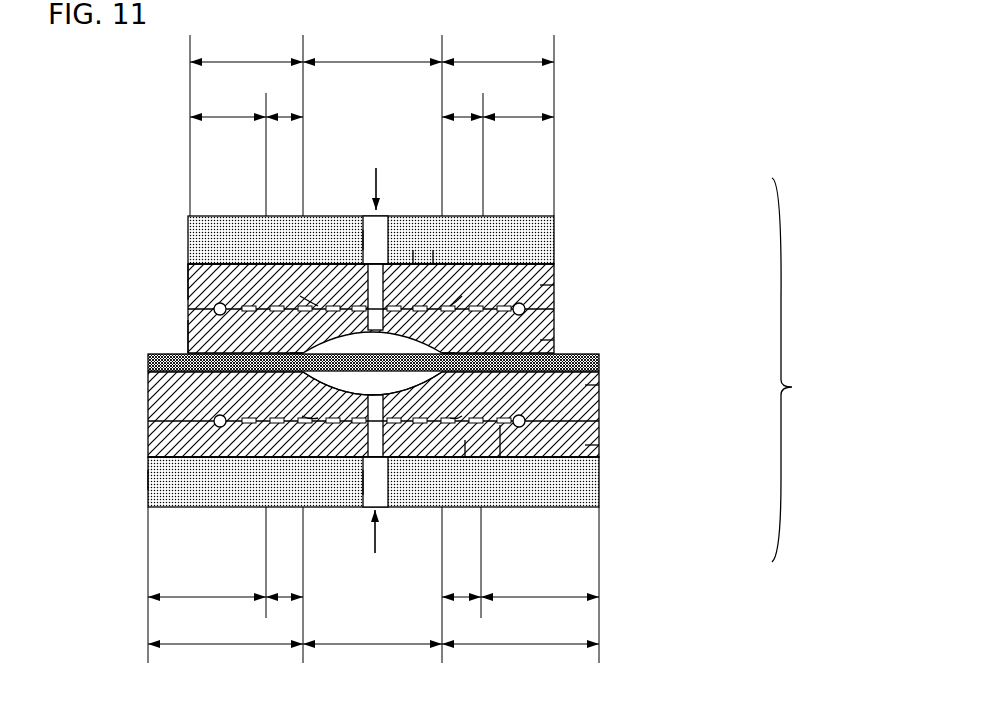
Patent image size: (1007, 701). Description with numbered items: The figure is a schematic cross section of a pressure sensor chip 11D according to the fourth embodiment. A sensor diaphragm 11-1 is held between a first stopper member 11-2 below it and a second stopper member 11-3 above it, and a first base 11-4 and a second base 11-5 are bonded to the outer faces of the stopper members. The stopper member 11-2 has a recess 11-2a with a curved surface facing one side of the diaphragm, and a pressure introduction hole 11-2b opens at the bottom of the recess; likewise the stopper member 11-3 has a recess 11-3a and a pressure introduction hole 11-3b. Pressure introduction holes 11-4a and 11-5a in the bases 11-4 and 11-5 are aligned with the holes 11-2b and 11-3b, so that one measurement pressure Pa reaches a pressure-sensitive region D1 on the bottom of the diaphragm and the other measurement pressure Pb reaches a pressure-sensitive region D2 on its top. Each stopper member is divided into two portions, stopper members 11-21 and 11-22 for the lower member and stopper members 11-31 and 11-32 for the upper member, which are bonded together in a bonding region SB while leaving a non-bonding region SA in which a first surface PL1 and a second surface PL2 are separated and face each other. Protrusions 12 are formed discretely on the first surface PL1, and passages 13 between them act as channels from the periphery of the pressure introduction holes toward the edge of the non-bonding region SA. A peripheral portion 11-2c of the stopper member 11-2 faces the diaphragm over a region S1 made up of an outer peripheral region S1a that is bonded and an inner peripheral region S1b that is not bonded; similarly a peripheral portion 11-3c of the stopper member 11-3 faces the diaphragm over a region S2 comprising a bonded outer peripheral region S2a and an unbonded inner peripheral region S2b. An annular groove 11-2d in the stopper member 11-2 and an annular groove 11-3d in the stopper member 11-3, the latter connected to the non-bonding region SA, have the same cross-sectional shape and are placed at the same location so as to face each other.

The pressure sensor chip 11D is at (428, 348).
The sensor diaphragm 11-1 is at (599, 362).
The first stopper member 11-2 is at (599, 405).
The stopper member 11-21 is at (599, 386).
The stopper member 11-22 is at (599, 446).
The recess 11-2a is at (402, 510).
The pressure introduction hole 11-2b is at (300, 507).
The peripheral portion 11-2c is at (450, 374).
The annular groove 11-2d is at (170, 468).
The second stopper member 11-3 is at (554, 274).
The stopper member 11-31 is at (548, 346).
The stopper member 11-32 is at (554, 288).
The recess 11-3a is at (458, 262).
The pressure introduction hole 11-3b is at (300, 275).
The peripheral portion 11-3c is at (188, 340).
The annular groove 11-3d is at (188, 237).
The first base 11-4 is at (599, 486).
The pressure introduction hole 11-4a is at (366, 508).
The second base 11-5 is at (554, 236).
The pressure introduction hole 11-5a is at (363, 240).
The protrusion 12 is at (415, 264).
The passage 13 is at (433, 264).
The first surface PL1 is at (210, 280).
The second surface PL2 is at (188, 309).
The non-bonding region SA is at (382, 347).
The bonding region SB is at (383, 355).
The measurement pressure Pa is at (373, 546).
The measurement pressure Pb is at (374, 177).
The region S1 is at (373, 630).
The outer peripheral region S1a is at (373, 583).
The inner peripheral region S1b is at (374, 583).
The pressure-sensitive region D1 is at (372, 630).
The region S2 is at (372, 49).
The outer peripheral region S2a is at (372, 104).
The inner peripheral region S2b is at (374, 104).
The pressure-sensitive region D2 is at (372, 49).